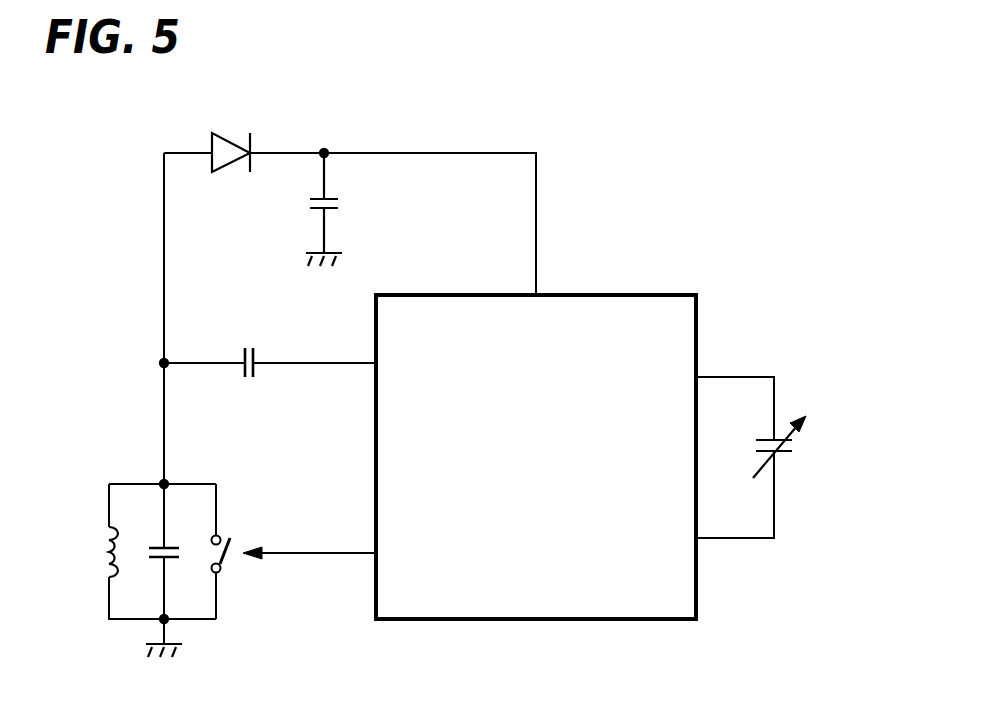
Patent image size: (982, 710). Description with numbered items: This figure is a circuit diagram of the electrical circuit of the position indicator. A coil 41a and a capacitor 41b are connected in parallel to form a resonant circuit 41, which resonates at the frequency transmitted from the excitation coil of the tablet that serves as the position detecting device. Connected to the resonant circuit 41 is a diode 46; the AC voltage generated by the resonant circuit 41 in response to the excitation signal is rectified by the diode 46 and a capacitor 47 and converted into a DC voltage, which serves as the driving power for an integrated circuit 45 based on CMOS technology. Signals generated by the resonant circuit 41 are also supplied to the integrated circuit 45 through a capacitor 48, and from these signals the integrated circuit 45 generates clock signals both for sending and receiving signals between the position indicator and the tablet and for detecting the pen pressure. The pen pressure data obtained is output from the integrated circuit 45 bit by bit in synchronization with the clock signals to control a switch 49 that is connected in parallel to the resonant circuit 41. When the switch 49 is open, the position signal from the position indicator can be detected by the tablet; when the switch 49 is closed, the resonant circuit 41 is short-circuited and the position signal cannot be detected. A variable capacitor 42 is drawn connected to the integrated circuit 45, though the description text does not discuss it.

The diode 46 is at (229, 128).
The capacitor 47 is at (343, 201).
The capacitor 48 is at (248, 383).
The integrated circuit 45 is at (507, 620).
The variable capacitor 42 is at (800, 452).
The resonant circuit 41 is at (114, 585).
The coil 41a is at (93, 552).
The capacitor 41b is at (171, 565).
The switch 49 is at (237, 563).